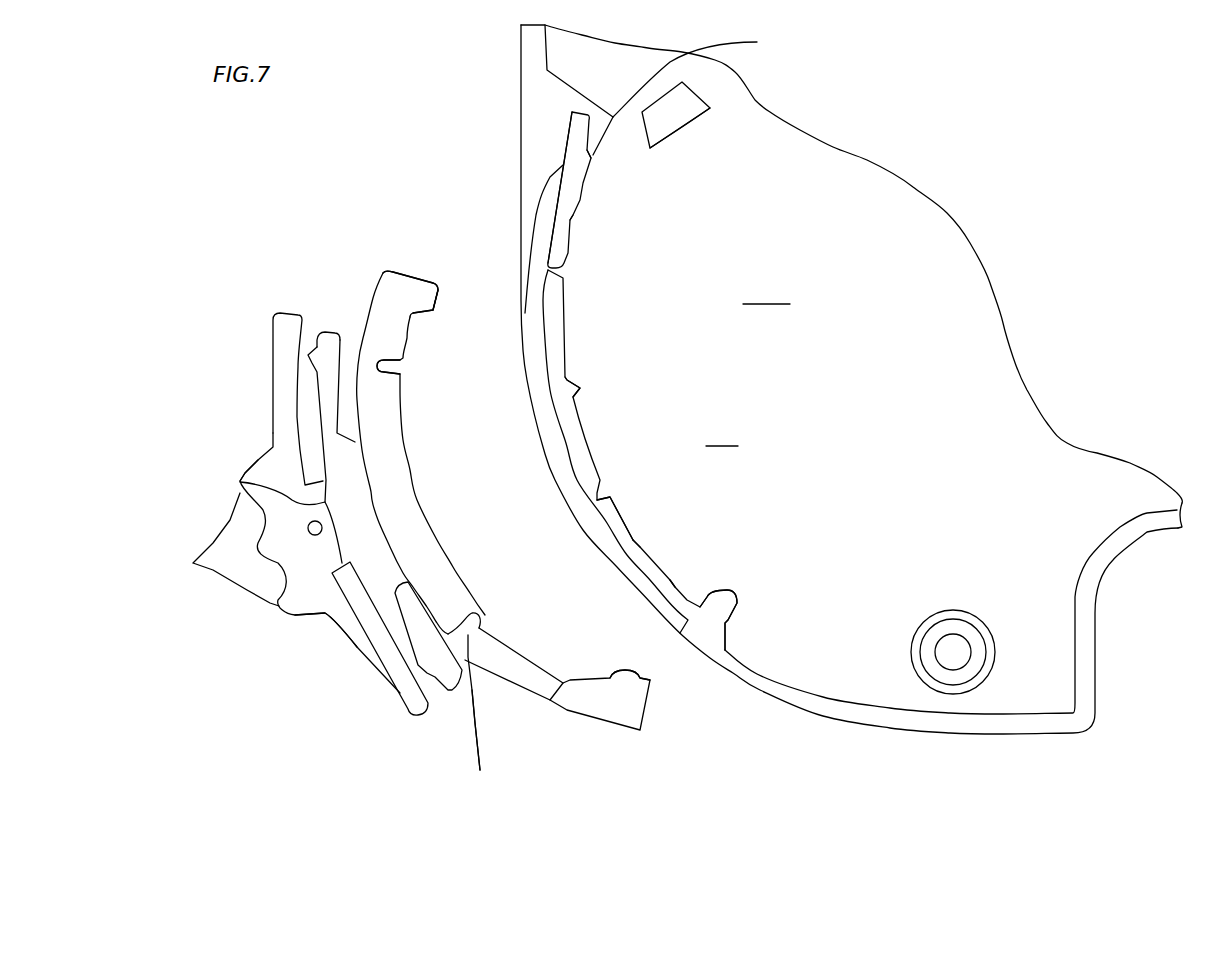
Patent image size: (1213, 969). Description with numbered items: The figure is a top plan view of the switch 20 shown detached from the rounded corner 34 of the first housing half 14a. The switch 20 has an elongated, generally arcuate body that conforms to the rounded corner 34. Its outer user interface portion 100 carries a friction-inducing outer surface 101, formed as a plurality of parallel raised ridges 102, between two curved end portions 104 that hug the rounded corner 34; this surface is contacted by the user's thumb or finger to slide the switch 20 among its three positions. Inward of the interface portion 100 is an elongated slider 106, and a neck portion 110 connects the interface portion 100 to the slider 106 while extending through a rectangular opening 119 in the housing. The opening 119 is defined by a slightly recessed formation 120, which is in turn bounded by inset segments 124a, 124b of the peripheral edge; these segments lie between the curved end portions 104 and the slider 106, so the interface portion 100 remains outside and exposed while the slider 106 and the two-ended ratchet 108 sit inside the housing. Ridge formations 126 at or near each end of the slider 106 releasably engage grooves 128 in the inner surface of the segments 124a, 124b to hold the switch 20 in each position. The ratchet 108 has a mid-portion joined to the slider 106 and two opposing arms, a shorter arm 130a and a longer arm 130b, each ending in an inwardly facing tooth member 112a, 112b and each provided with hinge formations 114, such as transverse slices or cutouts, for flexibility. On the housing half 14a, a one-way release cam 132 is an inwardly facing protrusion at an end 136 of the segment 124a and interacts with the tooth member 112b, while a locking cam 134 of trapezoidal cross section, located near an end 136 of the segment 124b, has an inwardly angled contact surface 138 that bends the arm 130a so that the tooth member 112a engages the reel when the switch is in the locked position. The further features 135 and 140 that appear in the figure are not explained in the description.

The switch 20 is at (257, 713).
The rounded corner 34 is at (705, 741).
The first housing half 14a is at (851, 264).
The outer user interface portion 100 is at (273, 447).
The friction inducing outer surface 101 is at (323, 613).
The parallel raised ridges 102 is at (193, 563).
The curved end portions 104 is at (273, 345).
The inner elongated slider 106 is at (328, 312).
The two-ended ratchet 108 is at (407, 460).
The neck portion 110 is at (240, 478).
The tooth member 112a is at (433, 312).
The tooth member 112b is at (655, 680).
The hinge formations 114 is at (400, 372).
The rectangular opening 119 is at (580, 388).
The recessed formation 120 is at (567, 143).
The inset segment 124a is at (550, 197).
The inset segment 124b is at (613, 523).
The ridge formation 126 is at (327, 323).
The grooves 128 is at (571, 222).
The shorter arm 130a is at (370, 305).
The longer arm 130b is at (497, 680).
The one-way release cam 132 is at (733, 595).
The locking cam 134 is at (695, 87).
The projection 135 is at (440, 287).
The end of segment 136 is at (725, 637).
The contact surface 138 is at (700, 120).
The foot 140 is at (470, 740).